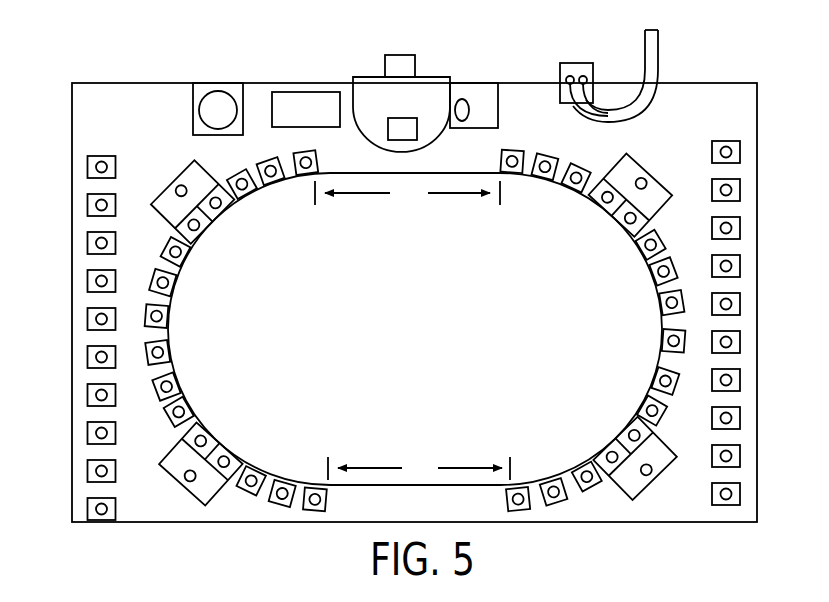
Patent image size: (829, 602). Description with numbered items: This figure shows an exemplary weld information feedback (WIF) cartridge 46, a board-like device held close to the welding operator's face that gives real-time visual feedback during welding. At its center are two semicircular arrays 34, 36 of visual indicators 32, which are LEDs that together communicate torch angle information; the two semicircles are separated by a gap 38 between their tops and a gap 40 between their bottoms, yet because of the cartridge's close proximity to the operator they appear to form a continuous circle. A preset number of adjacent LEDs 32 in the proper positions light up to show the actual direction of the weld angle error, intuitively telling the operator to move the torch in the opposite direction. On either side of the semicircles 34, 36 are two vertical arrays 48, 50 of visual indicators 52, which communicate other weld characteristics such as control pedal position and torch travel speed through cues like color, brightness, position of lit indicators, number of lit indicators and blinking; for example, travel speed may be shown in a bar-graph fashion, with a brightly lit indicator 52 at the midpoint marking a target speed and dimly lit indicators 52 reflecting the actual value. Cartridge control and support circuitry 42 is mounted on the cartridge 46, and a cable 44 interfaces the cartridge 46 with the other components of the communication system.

The visual indicators 32 is at (247, 194).
The first semicircular array 34 is at (150, 340).
The second semicircular array 36 is at (666, 330).
The gap 38 is at (407, 192).
The gap 40 is at (419, 467).
The cartridge control and support circuitry 42 is at (188, 110).
The cable 44 is at (658, 53).
The WIF cartridge 46 is at (108, 49).
The vertical array 48 is at (100, 148).
The vertical array 50 is at (727, 136).
The visual indicators 52 is at (410, 306).